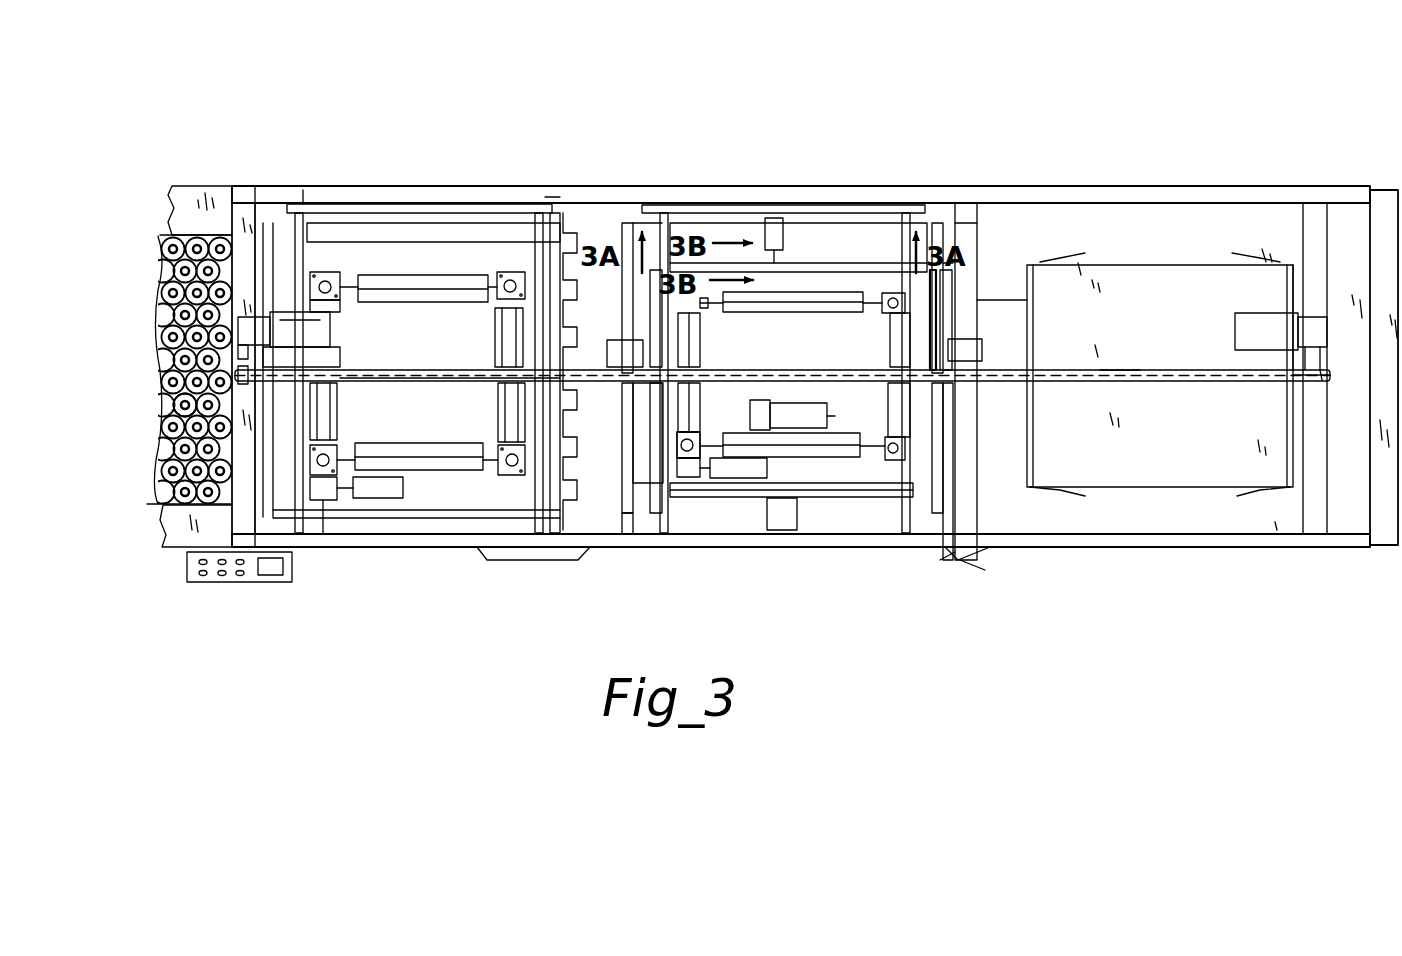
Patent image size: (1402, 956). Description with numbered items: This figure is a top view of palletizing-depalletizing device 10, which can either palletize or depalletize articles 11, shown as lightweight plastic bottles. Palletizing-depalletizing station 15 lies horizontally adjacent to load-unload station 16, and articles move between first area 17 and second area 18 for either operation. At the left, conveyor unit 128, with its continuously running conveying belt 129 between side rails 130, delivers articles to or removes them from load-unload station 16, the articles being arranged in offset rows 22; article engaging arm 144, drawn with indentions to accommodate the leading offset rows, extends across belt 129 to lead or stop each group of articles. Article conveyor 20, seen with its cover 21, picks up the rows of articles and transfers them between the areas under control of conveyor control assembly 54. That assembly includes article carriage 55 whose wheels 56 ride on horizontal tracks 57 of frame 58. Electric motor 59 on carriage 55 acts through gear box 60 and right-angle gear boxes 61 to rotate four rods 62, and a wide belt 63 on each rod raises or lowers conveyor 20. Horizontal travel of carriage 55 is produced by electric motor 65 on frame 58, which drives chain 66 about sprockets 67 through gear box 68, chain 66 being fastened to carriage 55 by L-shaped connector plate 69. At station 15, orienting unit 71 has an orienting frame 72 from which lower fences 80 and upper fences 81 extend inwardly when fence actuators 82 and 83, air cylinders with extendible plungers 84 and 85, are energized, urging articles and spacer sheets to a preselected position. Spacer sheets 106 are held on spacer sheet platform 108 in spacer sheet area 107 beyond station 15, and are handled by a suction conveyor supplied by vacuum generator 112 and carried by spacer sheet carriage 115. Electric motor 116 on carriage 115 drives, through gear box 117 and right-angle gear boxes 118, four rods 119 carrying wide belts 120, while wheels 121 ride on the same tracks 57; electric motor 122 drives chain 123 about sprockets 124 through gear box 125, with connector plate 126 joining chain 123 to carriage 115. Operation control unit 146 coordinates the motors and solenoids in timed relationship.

The palletizing-depalletizing device 10 is at (1050, 135).
The articles 11 is at (176, 246).
The palletizing-depalletizing station 15 is at (718, 175).
The load-unload station 16 is at (332, 175).
The first area 17 is at (467, 175).
The second area 18 is at (906, 175).
The article conveyor 20 is at (382, 240).
The cover 21 is at (518, 252).
The rows 22 is at (190, 418).
The conveyor control assembly 54 is at (518, 196).
The article carriage 55 is at (392, 185).
The wheels 56 is at (547, 185).
The horizontal tracks 57 is at (545, 142).
The frame 58 is at (246, 212).
The electric motor 59 is at (387, 498).
The gear box 60 is at (325, 500).
The 90° gear box 61 is at (326, 272).
The rods 62 is at (352, 300).
The wide belt 63 is at (340, 362).
The electric motor 65 is at (300, 320).
The chain 66 is at (440, 380).
The sprockets 67 is at (238, 372).
The gear box 68 is at (245, 330).
The L-shaped connector plate 69 is at (300, 392).
The orienting unit 71 is at (627, 530).
The orienting frame 72 is at (640, 462).
The lower fence 80 is at (840, 270).
The upper fence 81 is at (812, 262).
The fence actuator 82 is at (805, 285).
The fence actuator 83 is at (788, 245).
The extendible plunger 84 is at (800, 262).
The extendible plunger 85 is at (768, 225).
The spacer sheets 106 is at (1170, 268).
The spacer sheet area 107 is at (1212, 172).
The spacer sheet platform 108 is at (1232, 512).
The vacuum generator 112 is at (785, 440).
The spacer sheet carriage 115 is at (852, 478).
The electric motor 116 is at (735, 478).
The gear box 117 is at (690, 478).
The 90° gear box 118 is at (872, 292).
The rods 119 is at (880, 310).
The wide belt 120 is at (800, 312).
The wheels 121 is at (688, 160).
The electric motor 122 is at (1243, 313).
The chain 123 is at (1132, 350).
The sprockets 124 is at (802, 372).
The gear box 125 is at (1300, 328).
The connector plate 126 is at (955, 445).
The conveyor unit 128 is at (146, 470).
The conveying belt 129 is at (192, 245).
The side rails 130 is at (165, 505).
The article engaging arm 144 is at (575, 510).
The operation control unit 146 is at (276, 582).